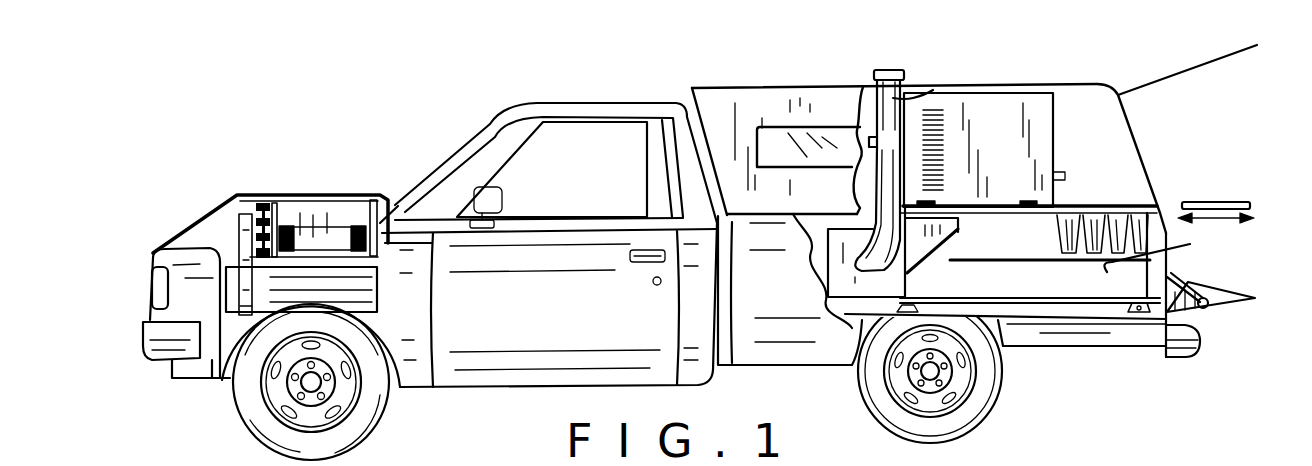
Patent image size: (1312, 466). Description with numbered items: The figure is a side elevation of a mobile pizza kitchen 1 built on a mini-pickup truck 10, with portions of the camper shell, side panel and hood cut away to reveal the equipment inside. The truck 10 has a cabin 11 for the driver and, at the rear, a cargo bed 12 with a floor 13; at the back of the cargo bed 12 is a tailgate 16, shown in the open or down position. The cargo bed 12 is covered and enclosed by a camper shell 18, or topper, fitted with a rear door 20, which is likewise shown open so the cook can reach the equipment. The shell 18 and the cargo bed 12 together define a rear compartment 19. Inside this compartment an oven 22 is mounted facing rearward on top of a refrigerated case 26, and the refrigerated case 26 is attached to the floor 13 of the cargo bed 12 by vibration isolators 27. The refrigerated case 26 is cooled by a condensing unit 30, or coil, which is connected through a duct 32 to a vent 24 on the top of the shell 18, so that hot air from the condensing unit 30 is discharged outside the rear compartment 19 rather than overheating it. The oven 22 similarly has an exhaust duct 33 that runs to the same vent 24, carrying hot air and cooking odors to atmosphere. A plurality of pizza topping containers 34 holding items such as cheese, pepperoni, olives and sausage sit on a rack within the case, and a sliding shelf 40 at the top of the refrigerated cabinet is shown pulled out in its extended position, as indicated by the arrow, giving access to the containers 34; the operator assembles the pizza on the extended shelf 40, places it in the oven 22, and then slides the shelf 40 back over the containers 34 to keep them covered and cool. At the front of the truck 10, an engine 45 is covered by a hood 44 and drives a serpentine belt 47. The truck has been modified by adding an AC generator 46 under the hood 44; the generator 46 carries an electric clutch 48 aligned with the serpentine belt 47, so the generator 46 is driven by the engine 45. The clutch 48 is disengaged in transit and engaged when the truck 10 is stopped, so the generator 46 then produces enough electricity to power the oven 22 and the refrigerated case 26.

The mobile pizza kitchen 1 is at (713, 246).
The mini-pickup truck 10 is at (645, 103).
The cabin 11 is at (596, 184).
The cargo bed 12 is at (808, 303).
The floor 13 is at (1067, 312).
The tailgate 16 is at (1222, 304).
The camper shell 18 is at (780, 87).
The rear compartment 19 is at (826, 247).
The rear door 20 is at (1153, 81).
The oven 22 is at (1012, 144).
The vent 24 is at (887, 70).
The refrigerated case 26 is at (1110, 300).
The vibration isolators 27 is at (1187, 352).
The condensing unit 30 is at (885, 278).
The duct 32 is at (883, 170).
The exhaust duct 33 is at (893, 98).
The pizza topping containers 34 is at (1088, 206).
The sliding shelf 40 is at (1208, 200).
The hood 44 is at (237, 195).
The engine 45 is at (277, 283).
The AC generator 46 is at (322, 220).
The serpentine belt 47 is at (243, 252).
The electric clutch 48 is at (268, 205).